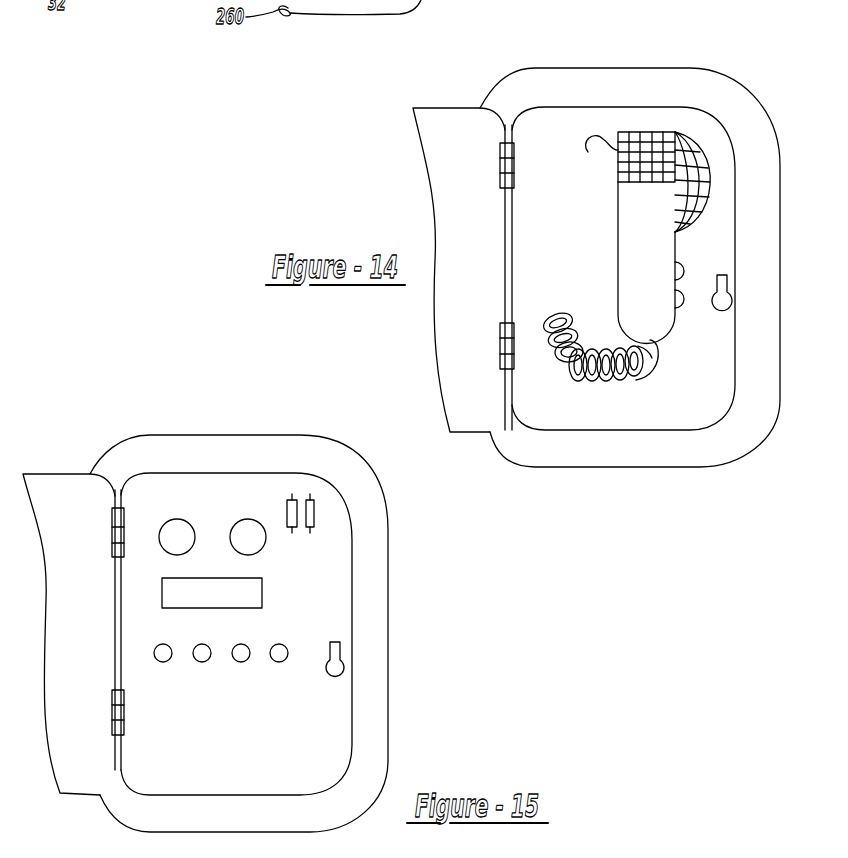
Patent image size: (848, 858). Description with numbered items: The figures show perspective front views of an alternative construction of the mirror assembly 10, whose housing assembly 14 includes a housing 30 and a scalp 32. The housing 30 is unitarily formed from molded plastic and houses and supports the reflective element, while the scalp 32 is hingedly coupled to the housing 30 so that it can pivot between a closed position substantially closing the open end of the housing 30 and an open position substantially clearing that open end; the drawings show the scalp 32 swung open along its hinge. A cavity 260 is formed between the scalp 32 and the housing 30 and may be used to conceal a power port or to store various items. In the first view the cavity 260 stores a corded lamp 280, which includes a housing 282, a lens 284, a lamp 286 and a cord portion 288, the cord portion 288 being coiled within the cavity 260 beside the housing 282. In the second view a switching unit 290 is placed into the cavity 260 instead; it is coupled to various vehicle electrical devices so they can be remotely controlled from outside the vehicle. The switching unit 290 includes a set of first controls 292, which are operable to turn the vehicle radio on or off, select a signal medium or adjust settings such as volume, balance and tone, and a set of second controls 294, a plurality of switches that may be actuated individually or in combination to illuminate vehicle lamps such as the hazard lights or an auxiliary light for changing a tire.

In FIG. 14, the mirror assembly 10 is at (742, 447).
In FIG. 15, the mirror assembly 10 is at (396, 706).
In FIG. 14, the housing assembly 14 is at (703, 55).
In FIG. 15, the housing assembly 14 is at (228, 428).
In FIG. 14, the housing 30 is at (735, 88).
In FIG. 15, the housing 30 is at (362, 485).
In FIG. 14, the scalp 32 is at (462, 415).
In FIG. 15, the scalp 32 is at (56, 480).
In FIG. 14, the cavity 260 is at (607, 416).
In FIG. 15, the cavity 260 is at (330, 600).
In FIG. 14, the corded lamp 280 is at (725, 202).
In FIG. 14, the housing 282 is at (650, 258).
In FIG. 14, the lens 284 is at (677, 212).
In FIG. 14, the lamp 286 is at (685, 175).
In FIG. 14, the cord portion 288 is at (643, 383).
In FIG. 15, the switching unit 290 is at (152, 608).
In FIG. 15, the first controls 292 is at (165, 558).
In FIG. 15, the second controls 294 is at (213, 667).